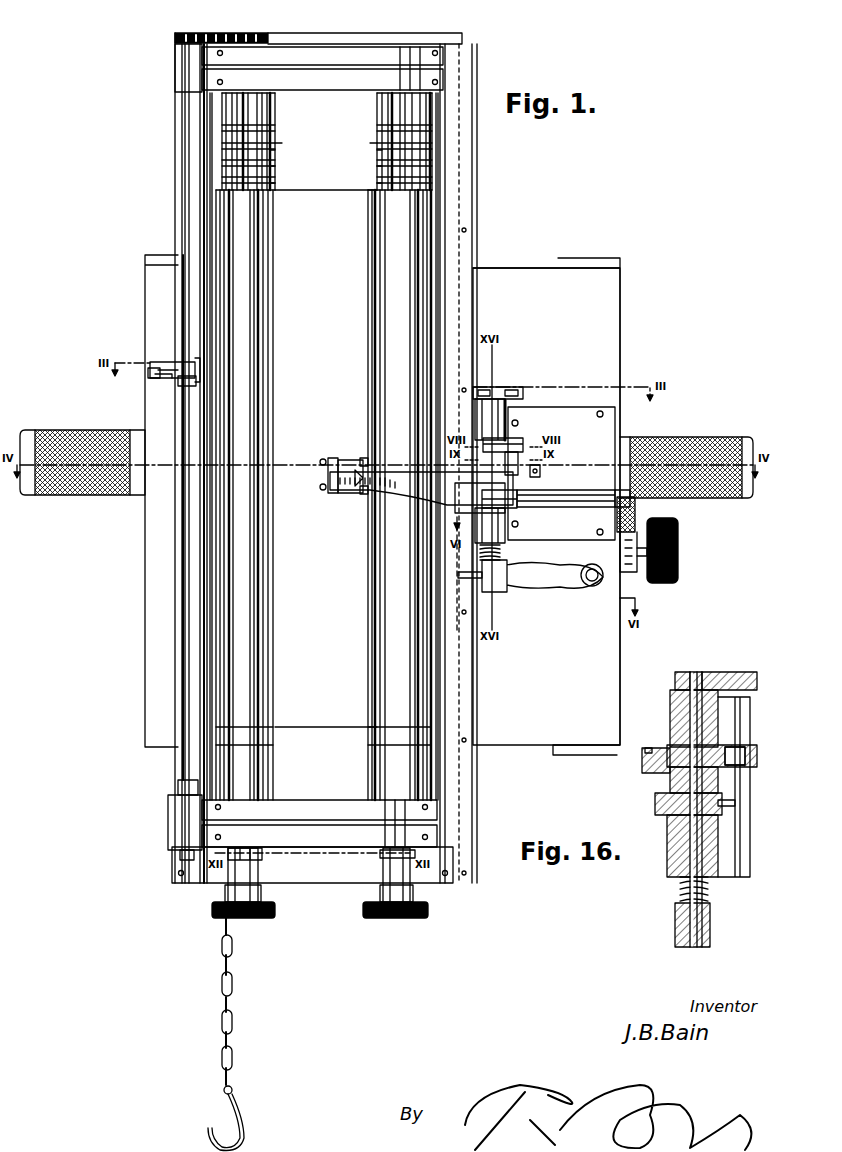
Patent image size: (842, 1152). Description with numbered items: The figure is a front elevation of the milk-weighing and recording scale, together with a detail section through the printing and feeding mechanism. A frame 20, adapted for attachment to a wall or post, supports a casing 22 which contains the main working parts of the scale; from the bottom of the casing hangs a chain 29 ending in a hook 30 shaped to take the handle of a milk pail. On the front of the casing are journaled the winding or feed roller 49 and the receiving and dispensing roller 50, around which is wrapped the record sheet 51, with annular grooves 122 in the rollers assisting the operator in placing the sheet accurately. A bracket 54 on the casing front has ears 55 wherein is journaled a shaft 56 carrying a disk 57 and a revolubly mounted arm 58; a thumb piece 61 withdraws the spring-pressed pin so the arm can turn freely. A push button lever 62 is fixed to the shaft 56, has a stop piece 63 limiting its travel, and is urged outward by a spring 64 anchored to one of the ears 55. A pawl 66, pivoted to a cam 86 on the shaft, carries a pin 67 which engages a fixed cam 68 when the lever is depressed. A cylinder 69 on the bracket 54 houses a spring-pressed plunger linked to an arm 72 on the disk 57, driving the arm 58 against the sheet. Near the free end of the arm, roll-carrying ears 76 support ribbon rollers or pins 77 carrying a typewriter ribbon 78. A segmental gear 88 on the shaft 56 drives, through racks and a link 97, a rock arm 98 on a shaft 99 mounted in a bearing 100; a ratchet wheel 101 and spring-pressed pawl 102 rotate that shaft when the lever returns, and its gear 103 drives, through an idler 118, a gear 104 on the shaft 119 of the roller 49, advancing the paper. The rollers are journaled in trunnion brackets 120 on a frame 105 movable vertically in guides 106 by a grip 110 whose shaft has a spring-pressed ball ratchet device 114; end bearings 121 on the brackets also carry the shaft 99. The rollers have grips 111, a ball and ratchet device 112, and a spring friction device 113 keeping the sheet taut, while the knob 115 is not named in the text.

In FIG. 1, the frame 20 is at (150, 255).
In FIG. 1, the casing 22 is at (546, 506).
In FIG. 1, the chain 29 is at (224, 1005).
In FIG. 1, the hook 30 is at (208, 1134).
In FIG. 1, the winding or feed roller 49 is at (255, 115).
In FIG. 1, the receiving and dispensing roller 50 is at (380, 115).
In FIG. 1, the sheet 51 is at (326, 458).
In FIG. 1, the bracket 54 is at (561, 473).
In FIG. 16, the bracket 54 is at (750, 831).
In FIG. 1, the ears 55 is at (485, 410).
In FIG. 16, the ears 55 is at (670, 714).
In FIG. 16, the shaft 56 is at (692, 947).
In FIG. 1, the disk 57 is at (510, 510).
In FIG. 16, the disk 57 is at (655, 804).
In FIG. 1, the arm 58 is at (380, 495).
In FIG. 16, the arm 58 is at (718, 781).
In FIG. 1, the thumb piece 61 is at (445, 472).
In FIG. 1, the push button lever 62 is at (542, 576).
In FIG. 16, the push button lever 62 is at (675, 928).
In FIG. 1, the stop piece 63 is at (466, 578).
In FIG. 1, the spring 64 is at (515, 565).
In FIG. 16, the spring 64 is at (680, 888).
In FIG. 1, the pawl 66 is at (510, 458).
In FIG. 16, the pawl 66 is at (652, 772).
In FIG. 1, the pin 67 is at (523, 469).
In FIG. 1, the fixed cam 68 is at (540, 469).
In FIG. 1, the cylinder 69 is at (592, 508).
In FIG. 16, the arm 72 is at (735, 801).
In FIG. 1, the roll-carrying ears 76 is at (333, 490).
In FIG. 1, the ribbon rollers or pins 77 is at (320, 484).
In FIG. 1, the typewriter ribbon 78 is at (345, 492).
In FIG. 1, the cam 86 is at (510, 438).
In FIG. 16, the cam 86 is at (757, 753).
In FIG. 1, the segmental gear 88 is at (497, 387).
In FIG. 16, the segmental gear 88 is at (723, 672).
In FIG. 1, the link 97 is at (165, 370).
In FIG. 1, the rock arm 98 is at (170, 374).
In FIG. 1, the shaft 99 is at (182, 573).
In FIG. 1, the bearing 100 is at (183, 386).
In FIG. 1, the ratchet wheel 101 is at (175, 356).
In FIG. 1, the spring-pressed pawl 102 is at (150, 368).
In FIG. 1, the gear 103 is at (175, 36).
In FIG. 1, the gear 104 is at (290, 21).
In FIG. 1, the frame 105 is at (208, 138).
In FIG. 1, the guides 106 is at (474, 208).
In FIG. 1, the finger piece or grip 110 is at (678, 555).
In FIG. 1, the finger pieces or grips 111 is at (362, 908).
In FIG. 1, the ball and ratchet device 112 is at (252, 860).
In FIG. 1, the spring friction device 113 is at (390, 860).
In FIG. 1, the spring-pressed ball ratchet device 114 is at (637, 510).
In FIG. 1, the hand knob 115 is at (70, 431).
In FIG. 1, the idler 118 is at (218, 33).
In FIG. 1, the shaft 119 is at (238, 868).
In FIG. 1, the trunnion brackets 120 is at (322, 447).
In FIG. 1, the end bearings 121 is at (180, 68).
In FIG. 1, the annular grooves 122 is at (350, 160).